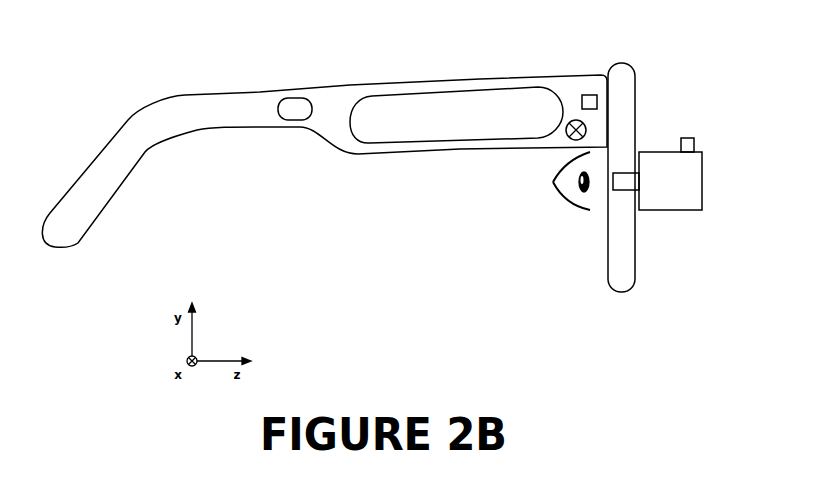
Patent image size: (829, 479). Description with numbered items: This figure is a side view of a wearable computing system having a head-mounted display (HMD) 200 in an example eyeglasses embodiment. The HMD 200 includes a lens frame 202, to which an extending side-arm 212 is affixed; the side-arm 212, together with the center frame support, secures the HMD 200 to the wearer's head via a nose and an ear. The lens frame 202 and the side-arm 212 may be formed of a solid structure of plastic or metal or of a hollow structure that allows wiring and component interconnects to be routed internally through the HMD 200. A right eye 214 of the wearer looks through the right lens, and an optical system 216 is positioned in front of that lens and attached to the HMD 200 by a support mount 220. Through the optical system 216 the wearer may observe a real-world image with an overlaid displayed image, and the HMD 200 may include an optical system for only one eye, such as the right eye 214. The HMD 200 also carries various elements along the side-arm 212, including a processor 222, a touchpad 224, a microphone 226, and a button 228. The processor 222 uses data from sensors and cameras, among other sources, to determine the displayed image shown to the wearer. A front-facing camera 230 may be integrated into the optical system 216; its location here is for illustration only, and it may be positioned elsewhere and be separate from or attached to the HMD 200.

The head-mounted display (HMD) 200 is at (384, 297).
The lens frame 202 is at (613, 293).
The extending side-arm 212 is at (164, 145).
The right eye 214 is at (587, 212).
The optical system 216 is at (702, 200).
The support mount 220 is at (618, 190).
The processor 222 is at (295, 98).
The touchpad 224 is at (442, 95).
The microphone 226 is at (576, 120).
The button 228 is at (594, 95).
The front-facing camera 230 is at (690, 138).